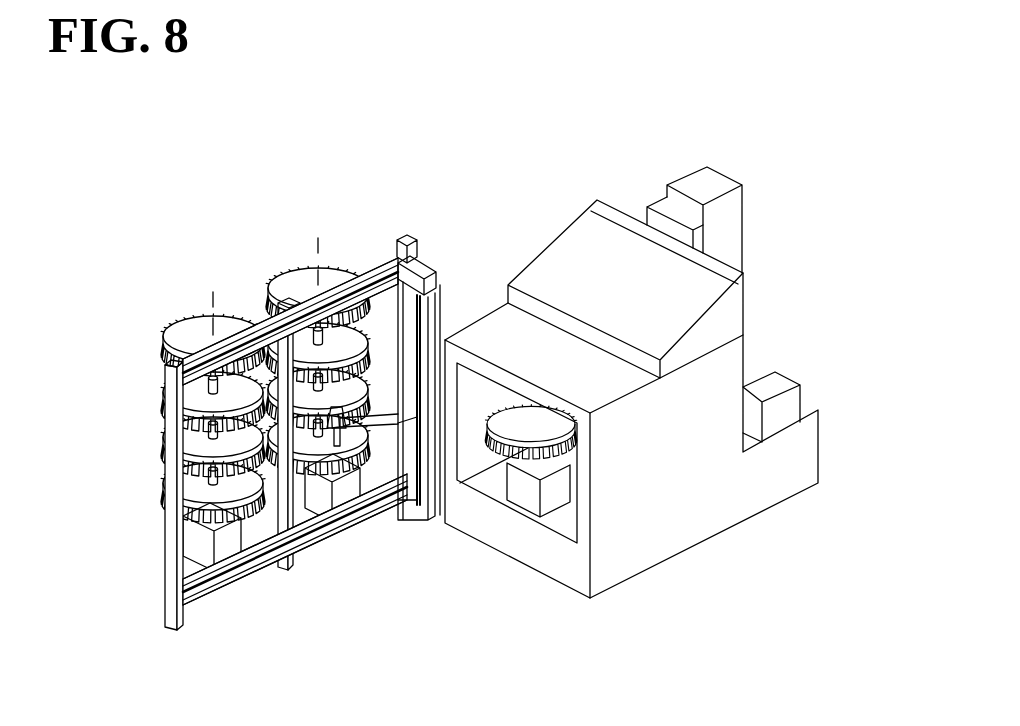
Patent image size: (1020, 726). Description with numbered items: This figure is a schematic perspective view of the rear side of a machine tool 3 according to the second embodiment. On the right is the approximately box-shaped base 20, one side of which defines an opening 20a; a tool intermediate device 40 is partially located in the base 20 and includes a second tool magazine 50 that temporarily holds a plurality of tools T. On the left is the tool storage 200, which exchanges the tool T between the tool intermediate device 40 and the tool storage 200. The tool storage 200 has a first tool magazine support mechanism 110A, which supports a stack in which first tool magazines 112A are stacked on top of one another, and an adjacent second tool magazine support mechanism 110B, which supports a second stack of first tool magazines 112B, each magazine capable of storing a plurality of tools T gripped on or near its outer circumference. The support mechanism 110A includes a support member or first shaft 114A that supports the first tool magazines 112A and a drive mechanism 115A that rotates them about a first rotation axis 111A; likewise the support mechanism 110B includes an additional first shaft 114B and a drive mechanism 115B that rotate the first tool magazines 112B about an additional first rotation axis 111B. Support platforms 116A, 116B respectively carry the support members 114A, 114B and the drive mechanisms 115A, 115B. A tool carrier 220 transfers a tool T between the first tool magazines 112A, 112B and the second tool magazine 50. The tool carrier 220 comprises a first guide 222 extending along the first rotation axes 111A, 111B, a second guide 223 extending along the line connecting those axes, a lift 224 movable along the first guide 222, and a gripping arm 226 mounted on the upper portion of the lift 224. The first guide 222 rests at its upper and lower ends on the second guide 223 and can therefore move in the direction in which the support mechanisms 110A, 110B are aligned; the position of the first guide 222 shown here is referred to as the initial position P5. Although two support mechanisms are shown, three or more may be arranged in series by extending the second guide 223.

The machine tool 3 is at (733, 157).
The base 20 is at (717, 510).
The opening 20a is at (472, 397).
The tool intermediate device 40 is at (566, 528).
The second tool magazine 50 is at (532, 447).
The tool storage 200 is at (252, 256).
The first tool magazine support mechanism 110A is at (347, 623).
The second tool magazine support mechanism 110B is at (83, 568).
The first rotation axis 111A is at (317, 244).
The additional first rotation axis 111B is at (213, 302).
The first tool magazine 112A is at (288, 275).
The first tool magazine 112B is at (193, 328).
The support member (first shaft) 114A is at (323, 463).
The support member (additional first shaft) 114B is at (213, 438).
The drive mechanism 115A is at (347, 483).
The drive mechanism 115B is at (210, 523).
The support platform 116A is at (370, 503).
The support platform 116B is at (203, 553).
The tool carrier 220 is at (187, 630).
The first guide 222 is at (436, 273).
The second guide 223 is at (170, 580).
The lift 224 is at (440, 395).
The gripping arm 226 is at (398, 347).
The initial position P5 is at (414, 226).
The tool T is at (345, 437).